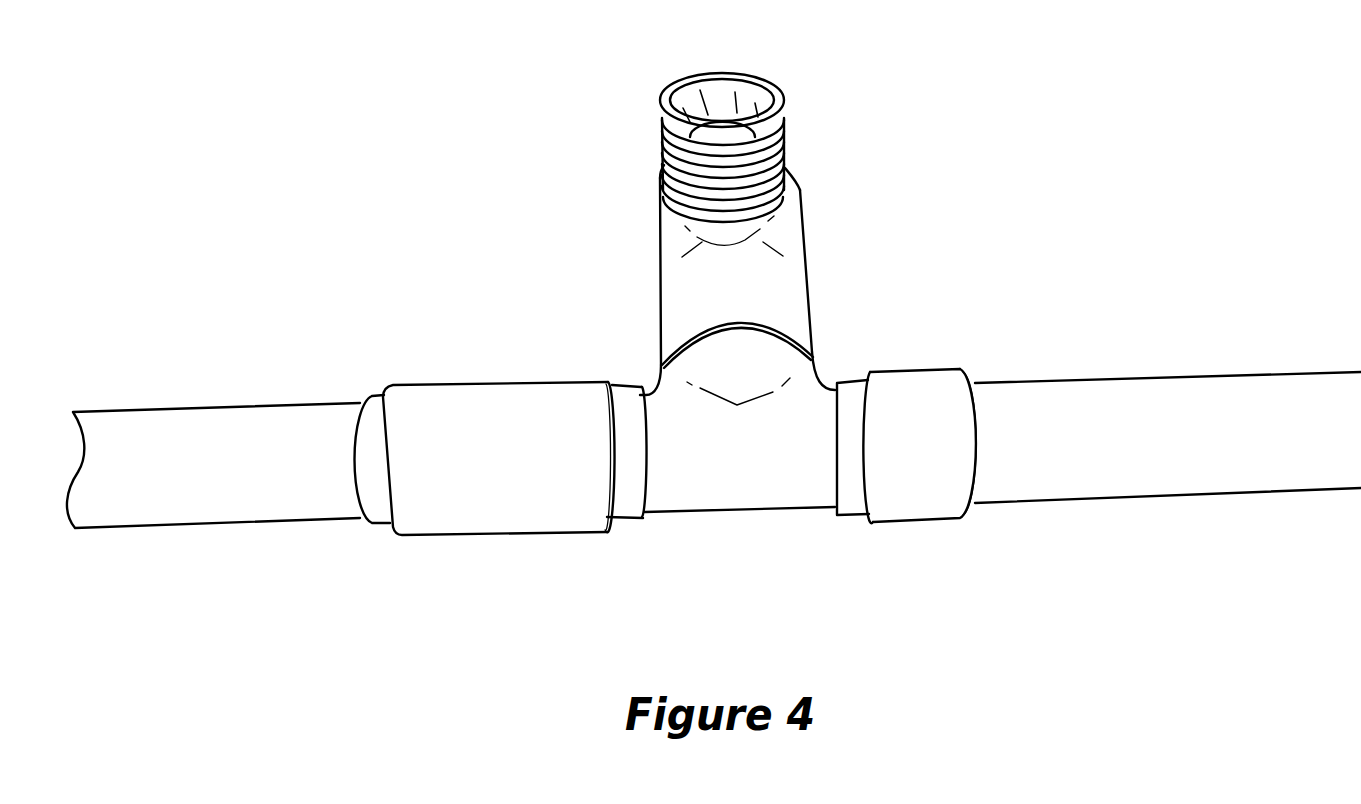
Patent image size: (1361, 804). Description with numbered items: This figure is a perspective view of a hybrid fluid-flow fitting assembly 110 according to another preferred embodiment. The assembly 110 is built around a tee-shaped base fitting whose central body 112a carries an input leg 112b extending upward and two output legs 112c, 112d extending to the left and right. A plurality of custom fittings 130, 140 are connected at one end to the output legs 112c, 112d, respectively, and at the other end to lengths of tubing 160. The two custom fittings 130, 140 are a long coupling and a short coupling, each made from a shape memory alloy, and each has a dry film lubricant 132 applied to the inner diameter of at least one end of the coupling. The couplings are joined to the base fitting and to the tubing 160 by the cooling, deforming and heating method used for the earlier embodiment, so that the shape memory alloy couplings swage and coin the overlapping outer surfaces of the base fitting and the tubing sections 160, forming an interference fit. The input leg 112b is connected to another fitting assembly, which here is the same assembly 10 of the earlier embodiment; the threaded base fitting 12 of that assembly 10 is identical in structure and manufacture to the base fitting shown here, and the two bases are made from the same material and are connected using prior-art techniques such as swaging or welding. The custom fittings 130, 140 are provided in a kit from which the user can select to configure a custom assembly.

The fitting assembly 10 is at (757, 343).
The base fitting 12 is at (800, 208).
The hybrid fluid-flow fitting assembly 110 is at (1101, 125).
The central body of fitting 112a is at (747, 488).
The input leg 112b is at (755, 368).
The output leg 112c is at (657, 462).
The output leg 112d is at (830, 452).
The custom fitting 130 is at (512, 407).
The dry film lubricant 132 is at (378, 401).
The custom fitting 140 is at (943, 378).
The tubing 160 is at (198, 425).